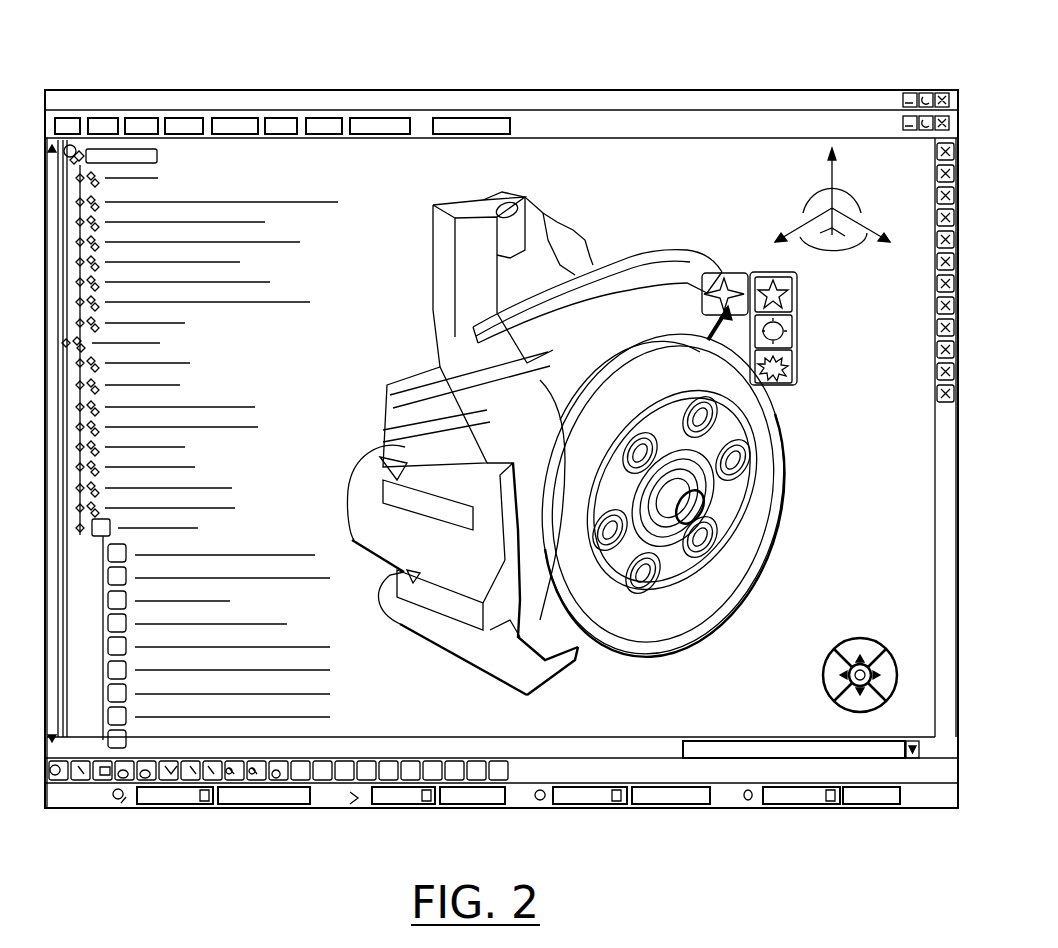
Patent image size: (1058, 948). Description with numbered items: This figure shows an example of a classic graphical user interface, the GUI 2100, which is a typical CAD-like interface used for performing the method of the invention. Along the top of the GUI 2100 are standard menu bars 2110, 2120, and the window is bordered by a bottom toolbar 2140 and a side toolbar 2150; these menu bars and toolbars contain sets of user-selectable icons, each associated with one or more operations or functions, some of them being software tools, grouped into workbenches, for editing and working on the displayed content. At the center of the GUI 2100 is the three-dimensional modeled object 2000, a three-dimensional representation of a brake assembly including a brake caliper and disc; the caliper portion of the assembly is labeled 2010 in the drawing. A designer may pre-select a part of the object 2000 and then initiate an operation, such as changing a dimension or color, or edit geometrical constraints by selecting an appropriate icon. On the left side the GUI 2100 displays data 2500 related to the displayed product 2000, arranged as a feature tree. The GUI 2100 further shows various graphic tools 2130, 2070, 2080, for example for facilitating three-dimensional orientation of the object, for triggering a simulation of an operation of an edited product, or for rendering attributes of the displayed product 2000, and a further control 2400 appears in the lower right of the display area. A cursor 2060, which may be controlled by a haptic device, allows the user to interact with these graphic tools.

The 3D modeled object 2000 is at (577, 443).
The brake caliper 2010 is at (452, 370).
The cursor 2060 is at (788, 387).
The graphic tool 2070 is at (745, 272).
The graphic tool 2080 is at (795, 335).
The GUI 2100 is at (767, 661).
The menu bar 2110 is at (612, 92).
The menu bar 2120 is at (702, 132).
The graphic tool 2130 is at (845, 244).
The bottom toolbar 2140 is at (518, 745).
The side toolbar 2150 is at (935, 430).
The navigation control widget 2400 is at (850, 630).
The data 2500 is at (180, 418).